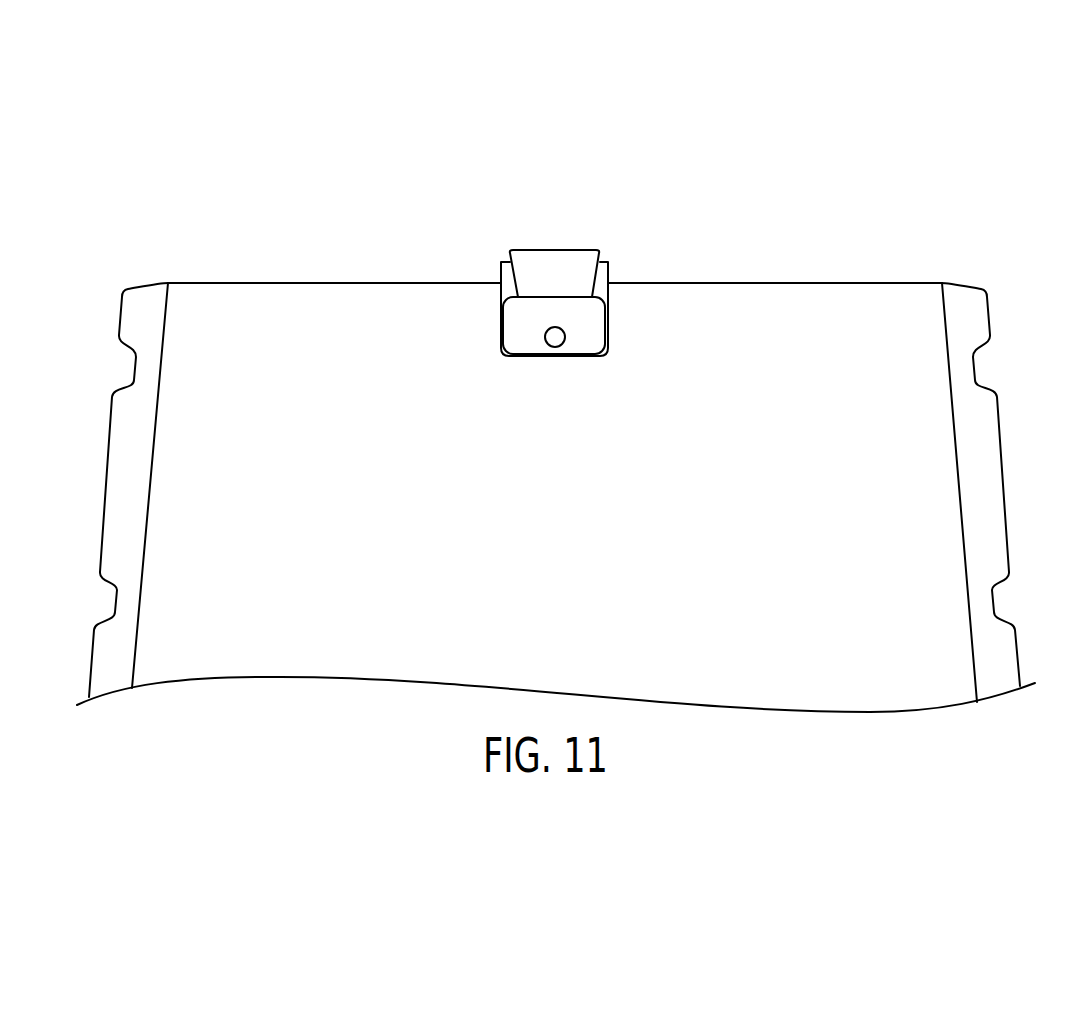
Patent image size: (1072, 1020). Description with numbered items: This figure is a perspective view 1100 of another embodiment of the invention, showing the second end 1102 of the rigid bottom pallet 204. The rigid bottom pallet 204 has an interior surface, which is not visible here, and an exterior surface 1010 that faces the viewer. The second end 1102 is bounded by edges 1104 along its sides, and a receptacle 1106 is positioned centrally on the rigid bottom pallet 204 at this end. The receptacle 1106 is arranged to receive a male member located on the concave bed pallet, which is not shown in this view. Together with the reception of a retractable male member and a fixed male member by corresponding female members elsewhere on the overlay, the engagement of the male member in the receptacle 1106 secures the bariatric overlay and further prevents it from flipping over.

The perspective view 1100 is at (993, 162).
The second end 1102 is at (307, 283).
The edges 1104 is at (138, 320).
The receptacle 1106 is at (553, 250).
The exterior surface 1010 is at (813, 298).
The rigid bottom pallet 204 is at (571, 506).